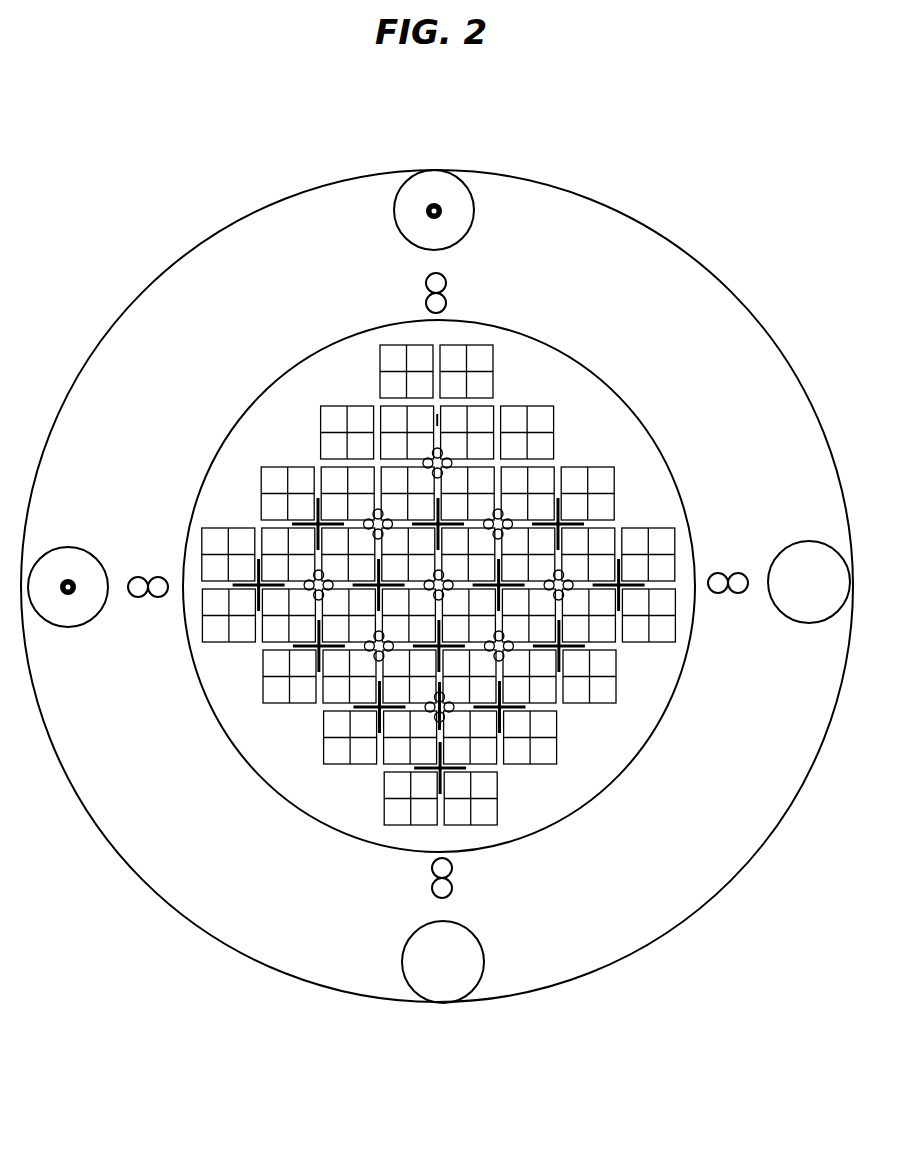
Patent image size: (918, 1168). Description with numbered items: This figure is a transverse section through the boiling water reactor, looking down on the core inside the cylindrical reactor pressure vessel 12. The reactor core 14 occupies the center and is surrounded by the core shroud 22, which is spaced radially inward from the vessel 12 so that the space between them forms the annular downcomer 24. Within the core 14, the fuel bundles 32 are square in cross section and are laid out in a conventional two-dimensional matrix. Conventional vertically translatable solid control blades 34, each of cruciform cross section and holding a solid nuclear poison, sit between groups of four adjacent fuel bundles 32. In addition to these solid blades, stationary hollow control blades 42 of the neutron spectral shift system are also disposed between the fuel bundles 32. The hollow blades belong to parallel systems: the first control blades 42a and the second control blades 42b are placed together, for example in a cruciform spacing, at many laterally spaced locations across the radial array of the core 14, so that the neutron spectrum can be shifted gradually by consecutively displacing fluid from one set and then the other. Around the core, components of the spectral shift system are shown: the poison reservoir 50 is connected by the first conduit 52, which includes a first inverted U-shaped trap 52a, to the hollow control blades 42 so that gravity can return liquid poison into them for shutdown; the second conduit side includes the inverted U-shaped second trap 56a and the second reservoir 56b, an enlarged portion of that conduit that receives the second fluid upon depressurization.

The reactor pressure vessel 12 is at (695, 913).
The reactor core 14 is at (525, 392).
The core shroud 22 is at (630, 407).
The annular downcomer 24 is at (187, 366).
The fuel bundle 32 is at (558, 736).
The control blade 34 is at (360, 727).
The hollow control blade 42 is at (307, 592).
The first control blade 42a is at (437, 713).
The second control blade 42b is at (445, 717).
The poison reservoir 50 is at (474, 213).
The first conduit 52 is at (69, 592).
The first inverted U-shaped trap 52a is at (447, 292).
The second trap 56a is at (730, 573).
The second reservoir 56b is at (806, 541).